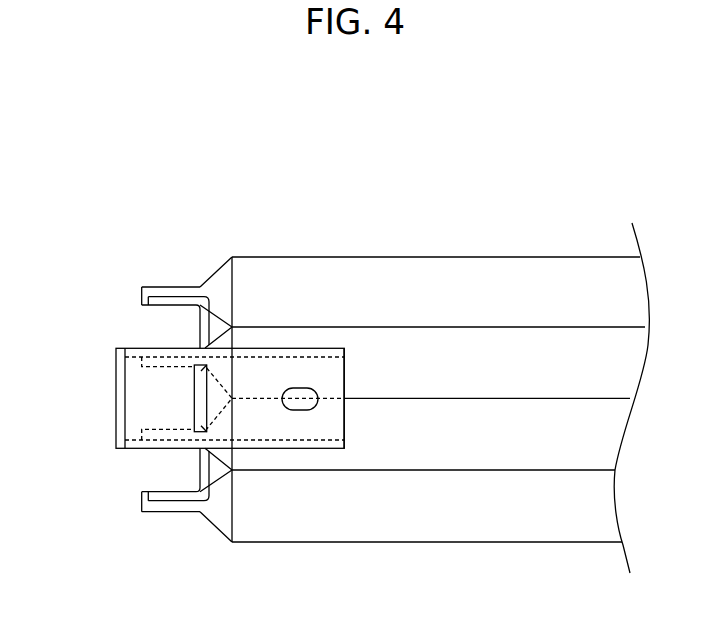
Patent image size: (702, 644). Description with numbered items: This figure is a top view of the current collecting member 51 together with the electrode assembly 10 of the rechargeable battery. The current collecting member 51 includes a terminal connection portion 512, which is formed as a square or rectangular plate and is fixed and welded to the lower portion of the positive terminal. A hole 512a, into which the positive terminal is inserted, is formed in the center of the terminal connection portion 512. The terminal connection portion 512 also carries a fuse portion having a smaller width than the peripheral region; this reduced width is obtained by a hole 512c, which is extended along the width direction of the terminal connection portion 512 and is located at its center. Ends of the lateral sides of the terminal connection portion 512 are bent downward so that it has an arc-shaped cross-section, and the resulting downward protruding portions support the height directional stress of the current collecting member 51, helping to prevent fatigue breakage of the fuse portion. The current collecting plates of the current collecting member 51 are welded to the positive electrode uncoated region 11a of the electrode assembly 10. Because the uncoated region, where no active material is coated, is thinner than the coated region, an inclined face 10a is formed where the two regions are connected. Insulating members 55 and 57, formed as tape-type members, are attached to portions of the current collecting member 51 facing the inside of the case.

The electrode assembly 10 is at (562, 373).
The inclined face 10a is at (232, 483).
The positive electrode uncoated region 11a is at (153, 512).
The current collecting member 51 is at (283, 348).
The terminal connection portion 512 is at (330, 418).
The hole 512a is at (305, 389).
The hole 512c is at (202, 390).
The insulating member 55 is at (142, 302).
The insulating member 57 is at (122, 417).